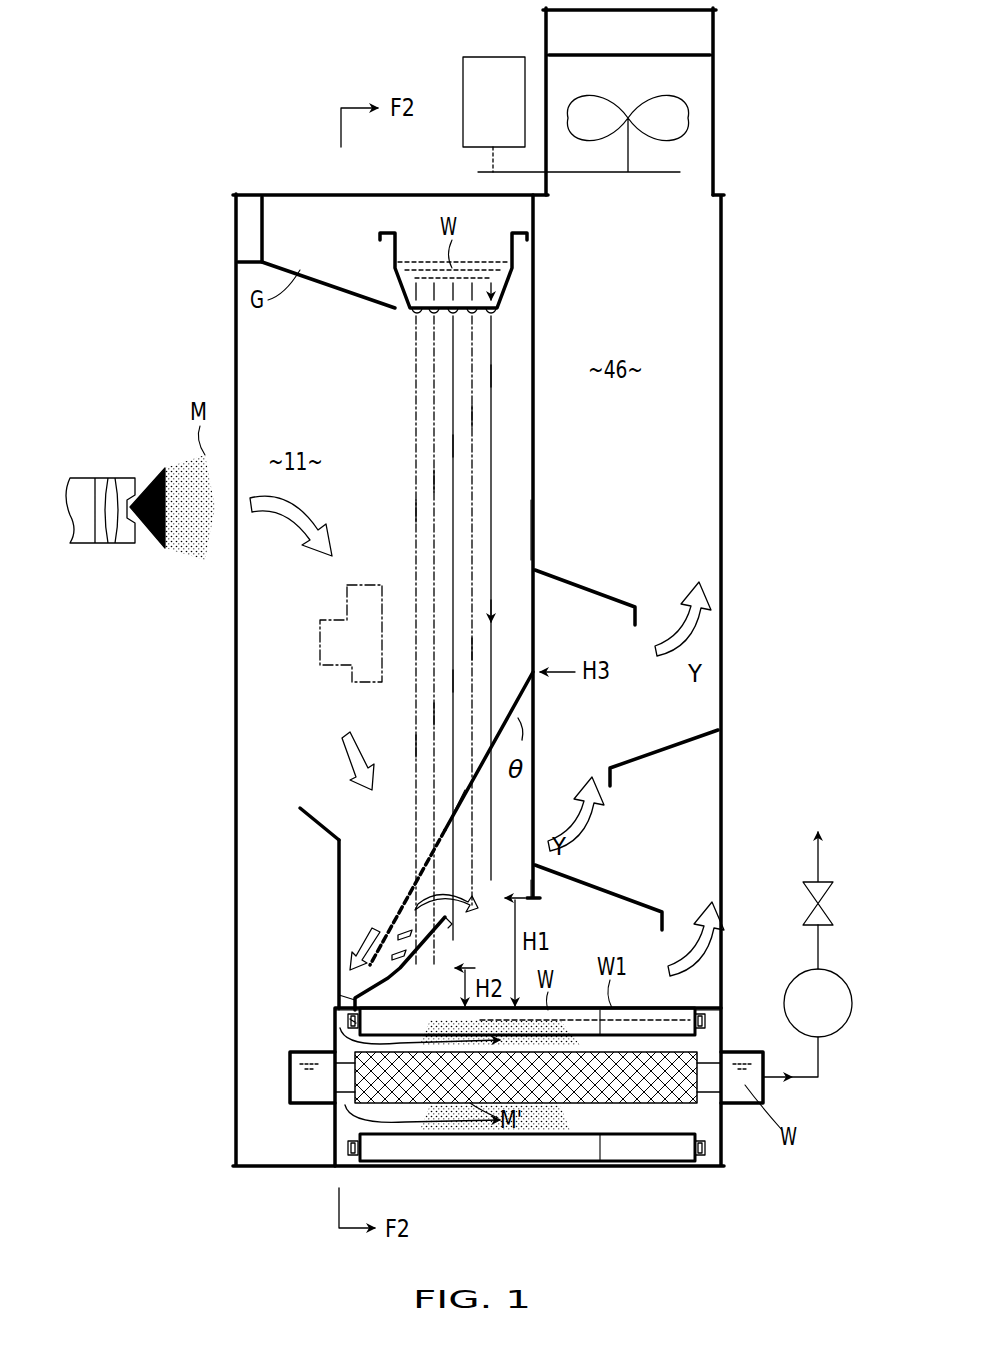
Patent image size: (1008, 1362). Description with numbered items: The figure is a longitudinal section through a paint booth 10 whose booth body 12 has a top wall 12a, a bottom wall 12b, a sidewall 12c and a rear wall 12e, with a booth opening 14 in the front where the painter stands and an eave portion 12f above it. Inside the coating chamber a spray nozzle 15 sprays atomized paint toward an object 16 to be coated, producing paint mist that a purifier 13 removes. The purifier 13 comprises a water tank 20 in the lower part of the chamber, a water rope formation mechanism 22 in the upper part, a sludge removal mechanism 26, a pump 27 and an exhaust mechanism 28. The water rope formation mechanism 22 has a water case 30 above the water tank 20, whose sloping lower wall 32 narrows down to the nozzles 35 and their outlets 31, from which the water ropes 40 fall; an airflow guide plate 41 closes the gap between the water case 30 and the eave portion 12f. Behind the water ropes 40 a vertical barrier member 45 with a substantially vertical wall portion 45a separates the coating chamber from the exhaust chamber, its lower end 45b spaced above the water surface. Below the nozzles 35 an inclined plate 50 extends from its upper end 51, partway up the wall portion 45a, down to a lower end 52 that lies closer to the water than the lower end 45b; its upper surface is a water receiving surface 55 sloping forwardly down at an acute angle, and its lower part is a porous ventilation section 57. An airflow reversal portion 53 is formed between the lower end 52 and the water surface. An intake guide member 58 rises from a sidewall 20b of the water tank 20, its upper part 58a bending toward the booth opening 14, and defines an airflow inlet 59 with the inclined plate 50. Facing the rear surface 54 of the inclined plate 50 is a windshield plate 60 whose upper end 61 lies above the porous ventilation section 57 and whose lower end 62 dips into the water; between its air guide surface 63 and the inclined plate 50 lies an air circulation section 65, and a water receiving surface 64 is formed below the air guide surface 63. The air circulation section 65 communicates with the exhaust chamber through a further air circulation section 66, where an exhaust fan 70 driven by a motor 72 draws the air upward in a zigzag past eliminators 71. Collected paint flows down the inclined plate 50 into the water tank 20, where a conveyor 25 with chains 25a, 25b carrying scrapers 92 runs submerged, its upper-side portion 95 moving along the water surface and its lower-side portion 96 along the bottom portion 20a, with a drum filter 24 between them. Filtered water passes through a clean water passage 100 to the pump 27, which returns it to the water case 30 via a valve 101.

The paint booth 10 is at (190, 268).
The booth body 12 is at (300, 190).
The top wall 12a is at (415, 192).
The bottom wall 12b is at (495, 1168).
The sidewall 12c is at (255, 365).
The rear wall 12e is at (725, 345).
The eave portion 12f is at (235, 245).
The purifier 13 is at (705, 972).
The booth opening 14 is at (235, 705).
The spray nozzle 15 is at (130, 478).
The object to be coated 16 is at (318, 632).
The water tank 20 is at (333, 1145).
The bottom portion 20a is at (545, 1168).
The sidewall 20b is at (333, 1045).
The water rope formation mechanism 22 is at (405, 318).
The drum filter 24 is at (605, 1168).
The conveyor 25 is at (580, 1008).
The chain 25a is at (333, 1020).
The chain 25b is at (722, 1010).
The sludge removal mechanism 26 is at (700, 1140).
The pump 27 is at (845, 983).
The exhaust mechanism 28 is at (745, 100).
The water case 30 is at (380, 248).
The discharge nozzles 31 is at (490, 318).
The reservoir wall 32 is at (520, 290).
The nozzles 35 is at (436, 322).
The water ropes 40 is at (460, 430).
The airflow guide plate 41 is at (308, 290).
The barrier member 45 is at (530, 440).
The wall portion 45a is at (530, 530).
The lower end 45b is at (537, 898).
The inclined plate 50 is at (468, 760).
The upper end 51 is at (535, 660).
The lower end 52 is at (355, 985).
The airflow reversal portion 53 is at (350, 1000).
The rear surface 54 is at (445, 850).
The water receiving surface 55 is at (452, 818).
The porous ventilation section 57 is at (385, 905).
The intake guide member 58 is at (337, 880).
The upper part 58a is at (336, 835).
The airflow inlet 59 is at (340, 918).
The windshield plate 60 is at (425, 948).
The upper end 61 is at (452, 918).
The lower end 62 is at (345, 1005).
The air guide surface 63 is at (397, 975).
The water receiving surface 64 is at (375, 988).
The air circulation section 65 is at (432, 905).
The air circulation section 66 is at (655, 915).
The exhaust fan 70 is at (705, 118).
The eliminators 71 is at (590, 590).
The motor 72 is at (463, 72).
The scrapers 92 is at (645, 1010).
The upper-side portion 95 is at (705, 1021).
The lower-side portion 96 is at (688, 1168).
The clean water passage 100 is at (765, 1085).
The valve 101 is at (830, 905).